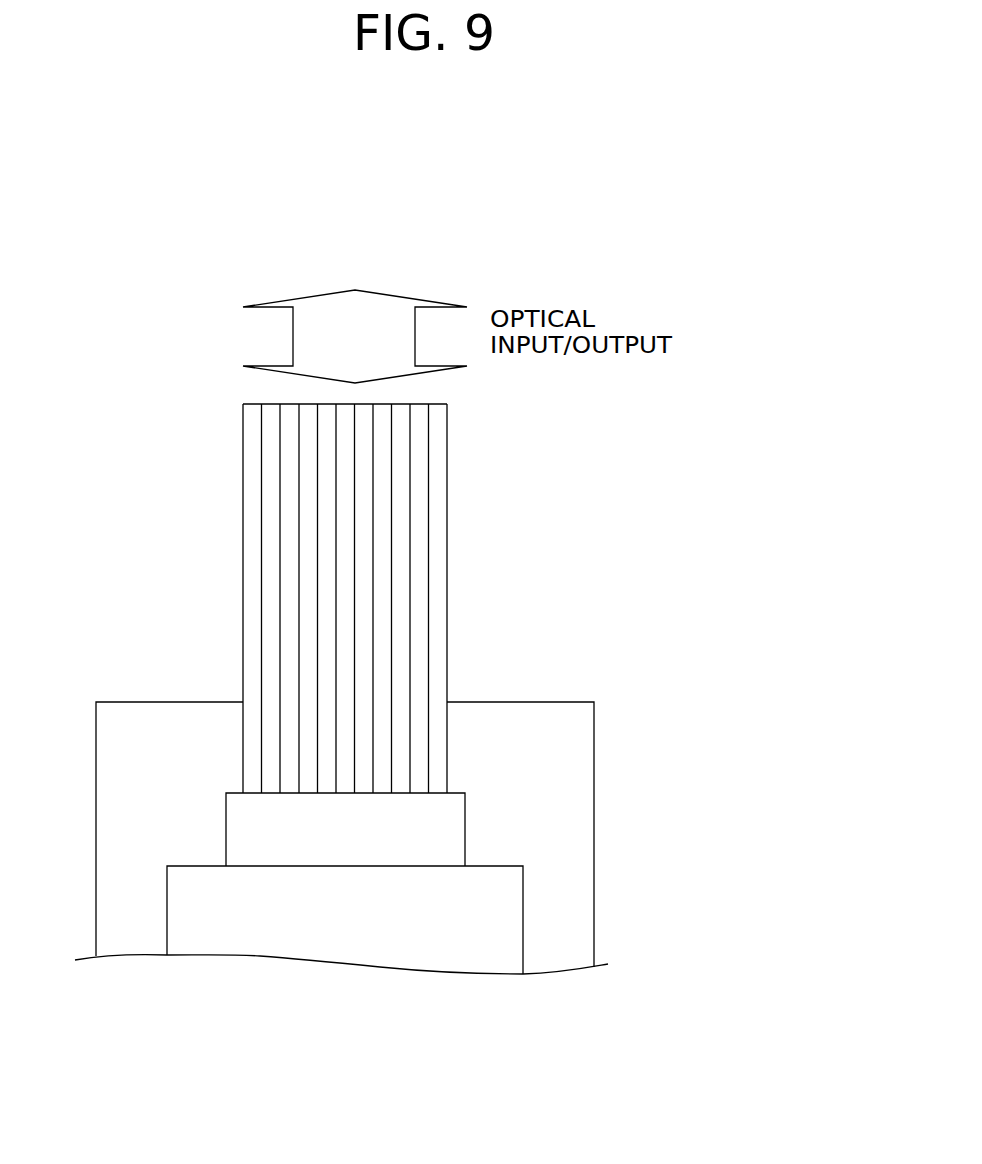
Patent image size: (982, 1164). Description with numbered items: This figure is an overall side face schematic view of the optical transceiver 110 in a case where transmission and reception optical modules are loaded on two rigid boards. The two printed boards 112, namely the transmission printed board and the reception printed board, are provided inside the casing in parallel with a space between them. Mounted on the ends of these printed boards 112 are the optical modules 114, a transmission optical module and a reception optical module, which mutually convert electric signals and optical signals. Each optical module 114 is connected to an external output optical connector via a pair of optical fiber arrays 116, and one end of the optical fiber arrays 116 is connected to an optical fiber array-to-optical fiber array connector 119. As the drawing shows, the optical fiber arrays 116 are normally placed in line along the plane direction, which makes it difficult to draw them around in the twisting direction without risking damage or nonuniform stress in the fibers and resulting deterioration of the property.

The optical transceiver 110 is at (452, 585).
The optical fiber arrays 116 is at (471, 434).
The printed boards 112 is at (575, 754).
The optical fiber array-to-optical fiber array connector 119 is at (448, 824).
The optical modules 114 is at (498, 898).